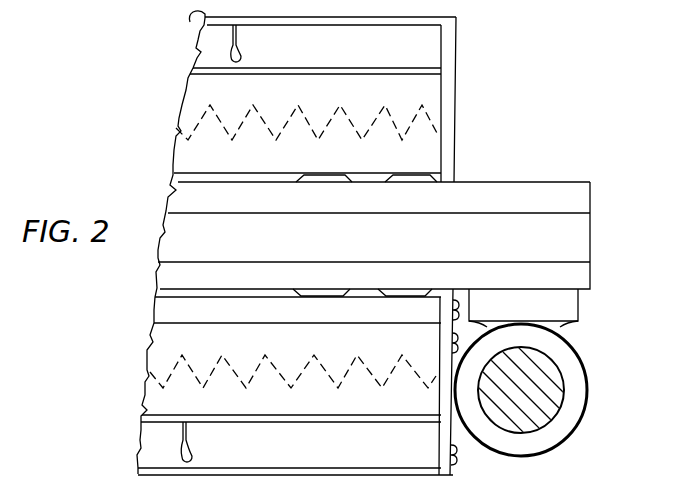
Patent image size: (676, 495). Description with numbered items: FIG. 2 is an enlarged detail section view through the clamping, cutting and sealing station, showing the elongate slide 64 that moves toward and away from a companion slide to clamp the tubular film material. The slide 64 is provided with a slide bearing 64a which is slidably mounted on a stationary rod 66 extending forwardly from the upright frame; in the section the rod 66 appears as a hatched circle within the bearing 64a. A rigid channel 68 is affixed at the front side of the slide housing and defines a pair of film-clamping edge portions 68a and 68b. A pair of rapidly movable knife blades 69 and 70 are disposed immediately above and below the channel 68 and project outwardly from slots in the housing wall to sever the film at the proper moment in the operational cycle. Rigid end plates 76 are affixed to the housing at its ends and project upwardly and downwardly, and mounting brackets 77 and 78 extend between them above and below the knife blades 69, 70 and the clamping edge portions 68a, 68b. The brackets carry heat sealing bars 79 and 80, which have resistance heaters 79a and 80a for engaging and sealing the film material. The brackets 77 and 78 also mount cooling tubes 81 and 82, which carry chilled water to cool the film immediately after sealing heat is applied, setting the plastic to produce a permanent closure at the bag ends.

The mounting bracket 77 is at (189, 242).
The cooling tube 81 is at (405, 55).
The heat sealing bar 79 is at (340, 105).
The resistance heater 79a is at (307, 138).
The knife blade 69 is at (336, 170).
The knife blade 70 is at (330, 297).
The rigid channel 68 is at (590, 240).
The film-clamping edge portion 68a is at (370, 213).
The film-clamping edge portion 68b is at (355, 268).
The elongate slide 64 is at (512, 173).
The slide bearing 64a is at (588, 393).
The stationary rod 66 is at (545, 413).
The rigid end plate 76 is at (455, 97).
The heat sealing bar 80 is at (330, 350).
The resistance heater 80a is at (293, 359).
The cooling tube 82 is at (248, 450).
The mounting bracket 78 is at (240, 470).